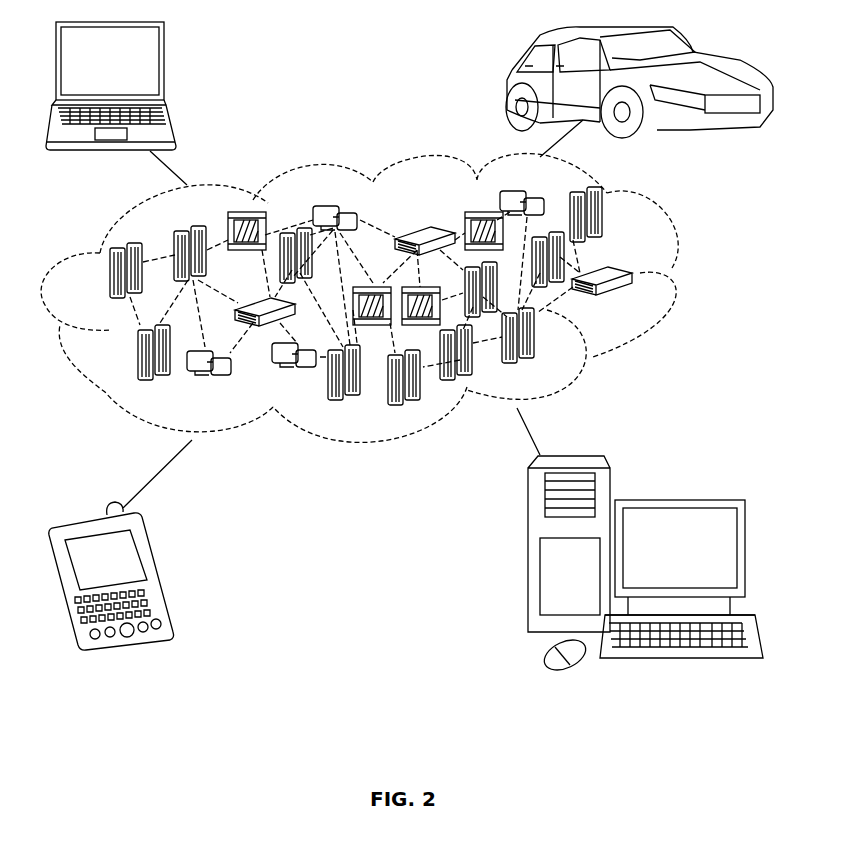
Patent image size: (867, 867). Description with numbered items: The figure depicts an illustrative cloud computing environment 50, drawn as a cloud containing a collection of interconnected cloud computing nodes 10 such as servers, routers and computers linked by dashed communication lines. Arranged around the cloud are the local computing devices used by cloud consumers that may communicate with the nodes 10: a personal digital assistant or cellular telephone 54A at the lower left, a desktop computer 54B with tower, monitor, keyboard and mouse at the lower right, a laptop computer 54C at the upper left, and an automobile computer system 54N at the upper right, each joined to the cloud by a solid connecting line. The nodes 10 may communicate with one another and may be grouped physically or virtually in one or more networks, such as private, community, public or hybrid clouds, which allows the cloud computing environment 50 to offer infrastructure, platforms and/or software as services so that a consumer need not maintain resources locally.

The laptop computer 54C is at (164, 72).
The automobile computer system 54N is at (508, 88).
The cloud computing environment 50 is at (680, 281).
The cloud computing node 10 is at (633, 301).
The personal digital assistant or cellular telephone 54A is at (152, 571).
The desktop computer 54B is at (676, 500).